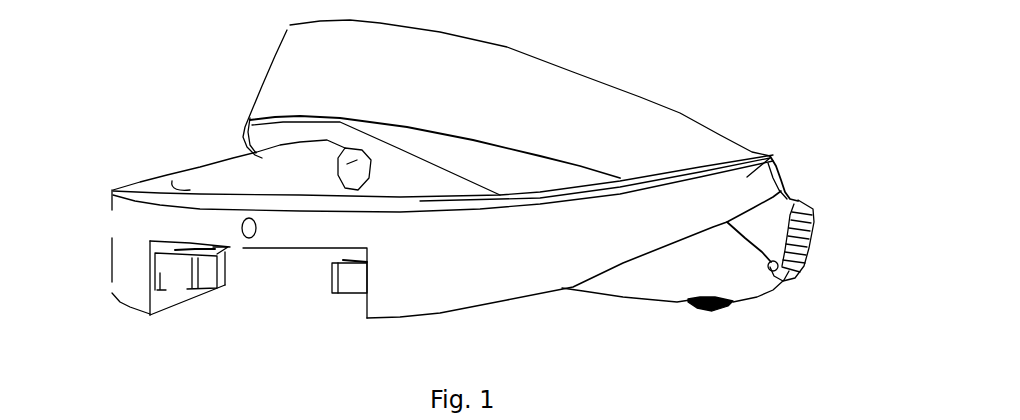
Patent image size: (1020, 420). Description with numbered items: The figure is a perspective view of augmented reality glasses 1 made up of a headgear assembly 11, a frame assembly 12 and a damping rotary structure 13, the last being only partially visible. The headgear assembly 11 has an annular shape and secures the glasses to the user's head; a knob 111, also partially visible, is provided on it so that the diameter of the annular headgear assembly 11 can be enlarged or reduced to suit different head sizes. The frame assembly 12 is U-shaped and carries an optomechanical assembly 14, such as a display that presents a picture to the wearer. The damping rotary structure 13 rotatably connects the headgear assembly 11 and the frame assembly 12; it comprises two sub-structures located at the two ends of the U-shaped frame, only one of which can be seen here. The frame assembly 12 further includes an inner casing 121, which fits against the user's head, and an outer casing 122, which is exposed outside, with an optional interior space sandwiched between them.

The augmented reality glasses 1 is at (512, 169).
The headgear assembly 11 is at (290, 46).
The knob 111 is at (730, 307).
The frame assembly 12 is at (775, 157).
The inner casing 121 is at (223, 182).
The outer casing 122 is at (130, 253).
The damping rotary structure 13 is at (253, 155).
The optomechanical assembly 14 is at (350, 274).